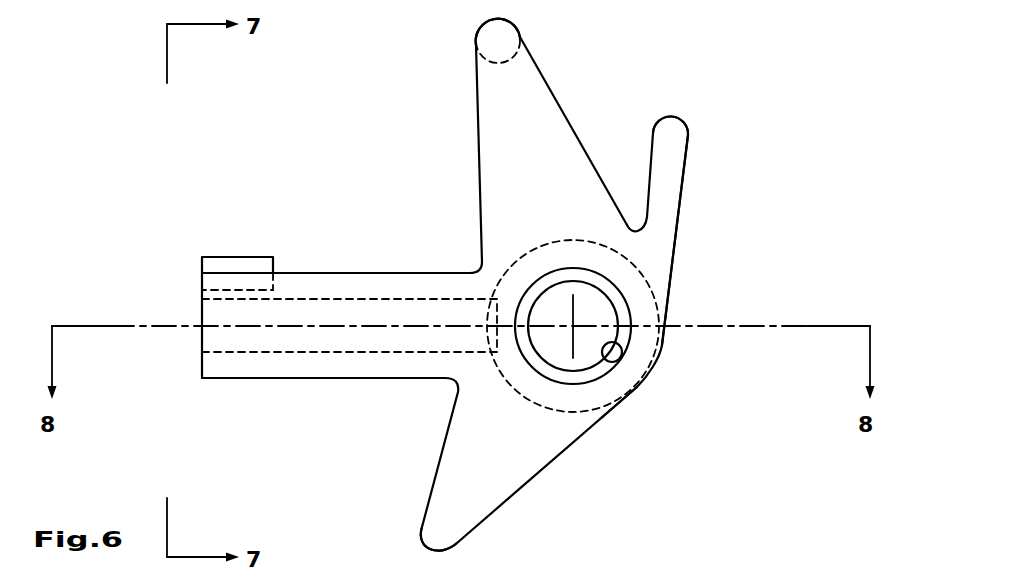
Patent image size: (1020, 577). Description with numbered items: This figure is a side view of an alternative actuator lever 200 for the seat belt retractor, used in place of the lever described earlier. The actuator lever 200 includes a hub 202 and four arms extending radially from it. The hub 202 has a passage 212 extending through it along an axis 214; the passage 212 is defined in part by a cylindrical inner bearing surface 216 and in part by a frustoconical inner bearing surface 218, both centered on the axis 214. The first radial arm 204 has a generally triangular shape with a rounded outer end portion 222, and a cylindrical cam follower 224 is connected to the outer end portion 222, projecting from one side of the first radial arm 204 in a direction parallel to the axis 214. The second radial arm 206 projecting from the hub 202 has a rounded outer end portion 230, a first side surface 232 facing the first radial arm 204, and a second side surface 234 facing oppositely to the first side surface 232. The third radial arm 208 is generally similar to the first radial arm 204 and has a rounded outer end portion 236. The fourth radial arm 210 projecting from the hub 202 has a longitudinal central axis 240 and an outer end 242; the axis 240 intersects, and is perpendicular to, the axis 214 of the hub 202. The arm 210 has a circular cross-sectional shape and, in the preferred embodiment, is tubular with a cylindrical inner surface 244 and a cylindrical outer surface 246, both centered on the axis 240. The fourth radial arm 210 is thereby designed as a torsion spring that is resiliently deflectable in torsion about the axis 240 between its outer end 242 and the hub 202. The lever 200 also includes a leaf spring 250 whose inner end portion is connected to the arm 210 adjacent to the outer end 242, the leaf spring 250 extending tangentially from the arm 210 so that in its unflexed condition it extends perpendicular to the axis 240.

The actuator lever 200 is at (655, 70).
The hub 202 is at (673, 349).
The first radial arm 204 is at (472, 179).
The second radial arm 206 is at (696, 166).
The third radial arm 208 is at (441, 445).
The fourth radial arm 210 is at (327, 265).
The passage 212 is at (603, 302).
The axis 214 is at (588, 309).
The cylindrical inner bearing surface 216 is at (628, 342).
The frustoconical inner bearing surface 218 is at (593, 374).
The rounded outer end portion 222 is at (497, 33).
The cam follower 224 is at (479, 89).
The rounded outer end portion 230 is at (674, 136).
The first side surface 232 is at (648, 177).
The second side surface 234 is at (683, 200).
The rounded outer end portion 236 is at (445, 533).
The longitudinal central axis 240 is at (103, 322).
The outer end 242 is at (200, 278).
The cylindrical inner surface 244 is at (228, 350).
The cylindrical outer surface 246 is at (247, 380).
The leaf spring 250 is at (215, 250).